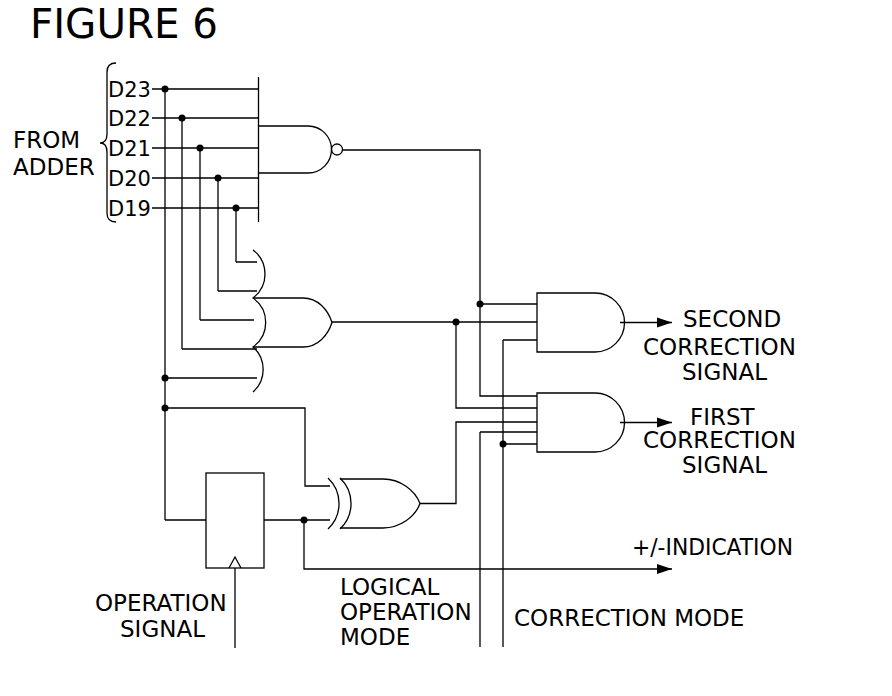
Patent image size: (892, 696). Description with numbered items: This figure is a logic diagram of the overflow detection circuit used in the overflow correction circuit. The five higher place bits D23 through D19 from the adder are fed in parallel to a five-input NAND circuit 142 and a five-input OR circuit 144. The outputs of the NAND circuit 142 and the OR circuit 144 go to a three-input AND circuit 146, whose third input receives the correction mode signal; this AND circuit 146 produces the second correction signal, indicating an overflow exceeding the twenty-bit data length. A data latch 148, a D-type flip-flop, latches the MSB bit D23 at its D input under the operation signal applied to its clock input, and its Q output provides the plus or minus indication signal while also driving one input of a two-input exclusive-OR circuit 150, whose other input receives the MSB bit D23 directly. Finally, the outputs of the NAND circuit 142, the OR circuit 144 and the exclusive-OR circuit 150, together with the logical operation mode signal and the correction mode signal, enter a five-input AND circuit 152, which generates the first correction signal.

The five-input NAND circuit 142 is at (295, 125).
The five-input OR circuit 144 is at (297, 293).
The three-input AND circuit 146 is at (580, 293).
The data latch 148 is at (218, 473).
The two-input exclusive-OR circuit 150 is at (368, 479).
The five-input AND circuit 152 is at (567, 452).